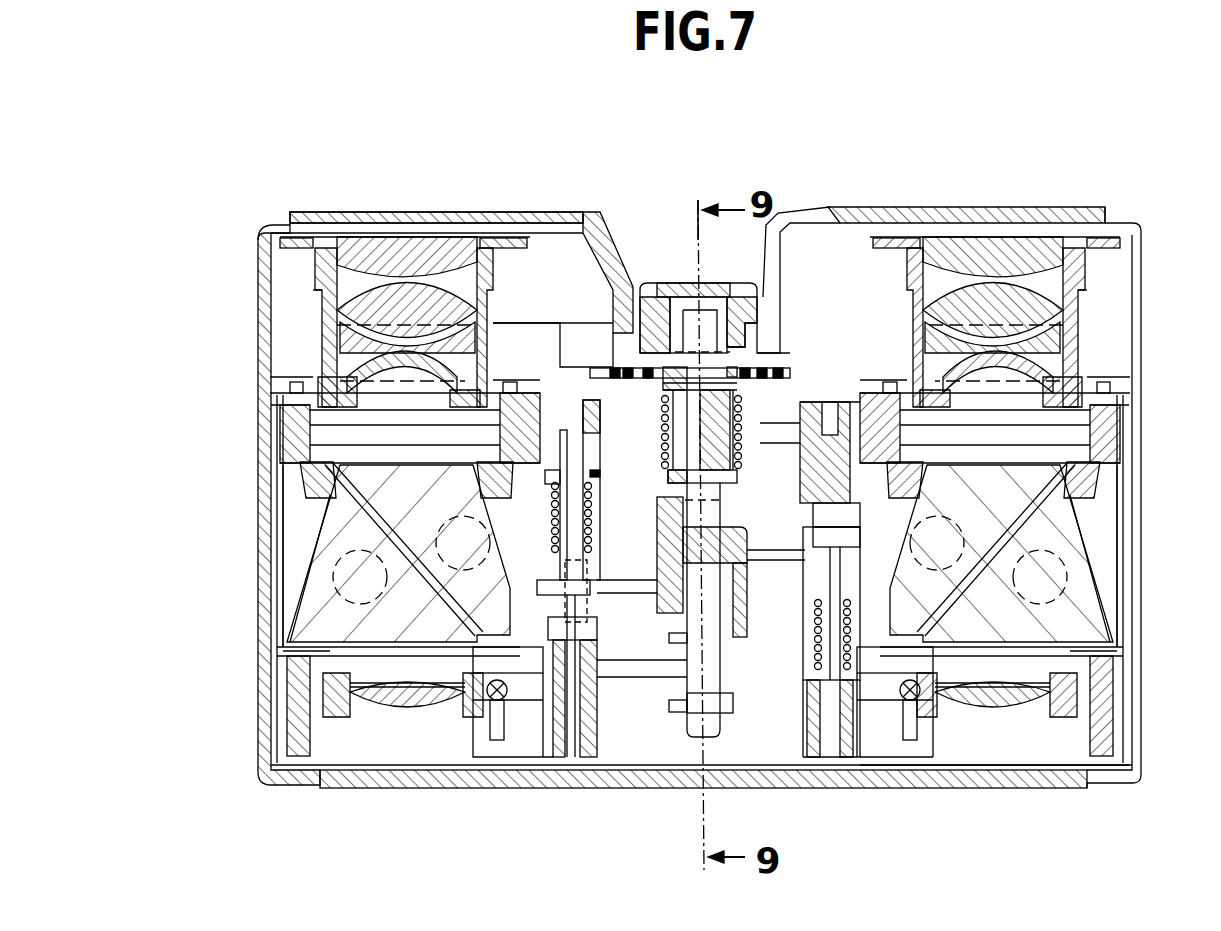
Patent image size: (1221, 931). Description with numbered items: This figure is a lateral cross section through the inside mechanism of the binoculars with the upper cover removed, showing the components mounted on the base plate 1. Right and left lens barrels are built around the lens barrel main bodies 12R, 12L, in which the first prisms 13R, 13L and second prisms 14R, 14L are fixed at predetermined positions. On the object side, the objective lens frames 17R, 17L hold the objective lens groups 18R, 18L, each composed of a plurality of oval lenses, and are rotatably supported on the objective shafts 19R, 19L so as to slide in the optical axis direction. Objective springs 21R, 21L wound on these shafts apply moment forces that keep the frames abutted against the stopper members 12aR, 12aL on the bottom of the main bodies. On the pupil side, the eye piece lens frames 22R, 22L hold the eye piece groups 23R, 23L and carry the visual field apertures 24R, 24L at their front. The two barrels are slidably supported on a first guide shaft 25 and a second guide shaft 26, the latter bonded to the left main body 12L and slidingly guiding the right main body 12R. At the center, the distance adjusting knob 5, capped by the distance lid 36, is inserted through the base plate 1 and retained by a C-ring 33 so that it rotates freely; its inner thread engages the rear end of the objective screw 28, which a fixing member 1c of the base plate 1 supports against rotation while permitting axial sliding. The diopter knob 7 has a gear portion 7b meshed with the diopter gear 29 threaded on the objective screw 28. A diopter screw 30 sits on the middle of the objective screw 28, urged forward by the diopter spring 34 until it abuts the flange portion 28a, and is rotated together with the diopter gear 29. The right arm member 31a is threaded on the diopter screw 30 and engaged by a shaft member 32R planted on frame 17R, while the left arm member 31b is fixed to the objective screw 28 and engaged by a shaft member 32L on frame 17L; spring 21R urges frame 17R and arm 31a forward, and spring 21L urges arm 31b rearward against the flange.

The base plate 1 is at (1141, 262).
The fixing member 1c is at (678, 715).
The distance adjusting knob 5 is at (650, 300).
The diopter knob 7 is at (522, 348).
The gear portion 7b is at (790, 358).
The lens barrel main body 12R is at (290, 708).
The lens barrel main body 12L is at (1110, 722).
The stopper member 12aR is at (500, 760).
The stopper member 12aL is at (895, 760).
The first prism 13R is at (375, 560).
The first prism 13L is at (1070, 623).
The second prism 14R is at (345, 505).
The second prism 14L is at (1015, 510).
The objective lens frame 17R is at (466, 715).
The objective lens frame 17L is at (1063, 715).
The objective lens group 18R is at (378, 712).
The objective lens group 18L is at (987, 712).
The objective shaft 19R is at (666, 787).
The objective shaft 19L is at (800, 497).
The objective spring 21R is at (660, 527).
The objective spring 21L is at (815, 622).
The eye piece lens frame 22R is at (487, 300).
The eye piece lens frame 22L is at (1112, 265).
The eye piece group 23R is at (380, 300).
The eye piece group 23L is at (1000, 298).
The visual field aperture 24R is at (347, 380).
The visual field aperture 24L is at (1010, 392).
The first guide shaft 25 is at (765, 432).
The second guide shaft 26 is at (630, 678).
The objective screw 28 is at (720, 777).
The flange portion 28a is at (800, 480).
The diopter gear 29 is at (737, 388).
The diopter screw 30 is at (665, 478).
The right arm member 31a is at (655, 596).
The left arm member 31b is at (716, 733).
The shaft member 32R is at (668, 637).
The shaft member 32L is at (735, 713).
The C-ring 33 is at (735, 372).
The diopter spring 34 is at (660, 407).
The distance lid 36 is at (712, 292).